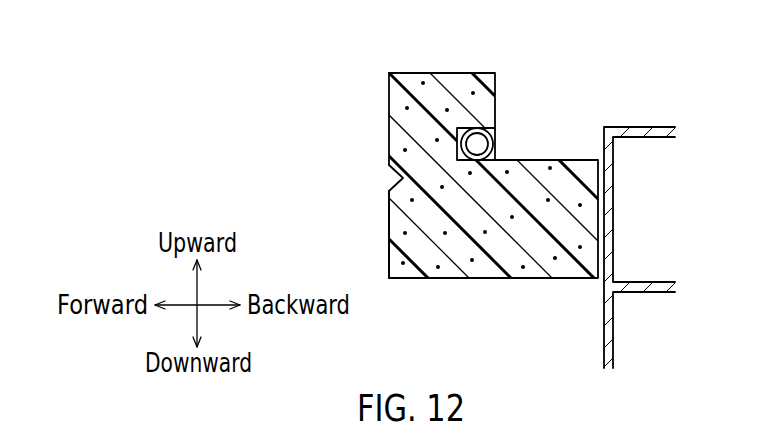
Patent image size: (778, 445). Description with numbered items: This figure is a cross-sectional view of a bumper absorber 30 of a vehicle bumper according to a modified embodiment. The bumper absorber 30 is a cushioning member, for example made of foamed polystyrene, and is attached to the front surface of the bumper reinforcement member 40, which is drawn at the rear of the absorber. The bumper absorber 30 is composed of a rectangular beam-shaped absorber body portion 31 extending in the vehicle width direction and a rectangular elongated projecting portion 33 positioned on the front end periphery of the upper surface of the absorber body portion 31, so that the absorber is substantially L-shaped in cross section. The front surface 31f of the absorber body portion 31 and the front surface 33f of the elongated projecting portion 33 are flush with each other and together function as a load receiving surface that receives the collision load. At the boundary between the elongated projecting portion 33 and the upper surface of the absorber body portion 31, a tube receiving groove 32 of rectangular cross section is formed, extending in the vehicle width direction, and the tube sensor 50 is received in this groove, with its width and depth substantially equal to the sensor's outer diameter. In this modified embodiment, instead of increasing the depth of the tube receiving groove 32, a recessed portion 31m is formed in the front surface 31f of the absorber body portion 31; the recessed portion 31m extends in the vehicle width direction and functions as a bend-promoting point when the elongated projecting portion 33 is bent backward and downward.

The bumper absorber 30 is at (428, 174).
The absorber body portion 31 is at (442, 254).
The front surface of absorber body portion 31f is at (389, 218).
The recessed portion 31m is at (400, 178).
The tube receiving groove 32 is at (496, 140).
The elongated projecting portion 33 is at (413, 82).
The front surface of elongated projecting portion 33f is at (389, 95).
The bumper reinforcement member 40 is at (662, 128).
The tube sensor 50 is at (497, 146).